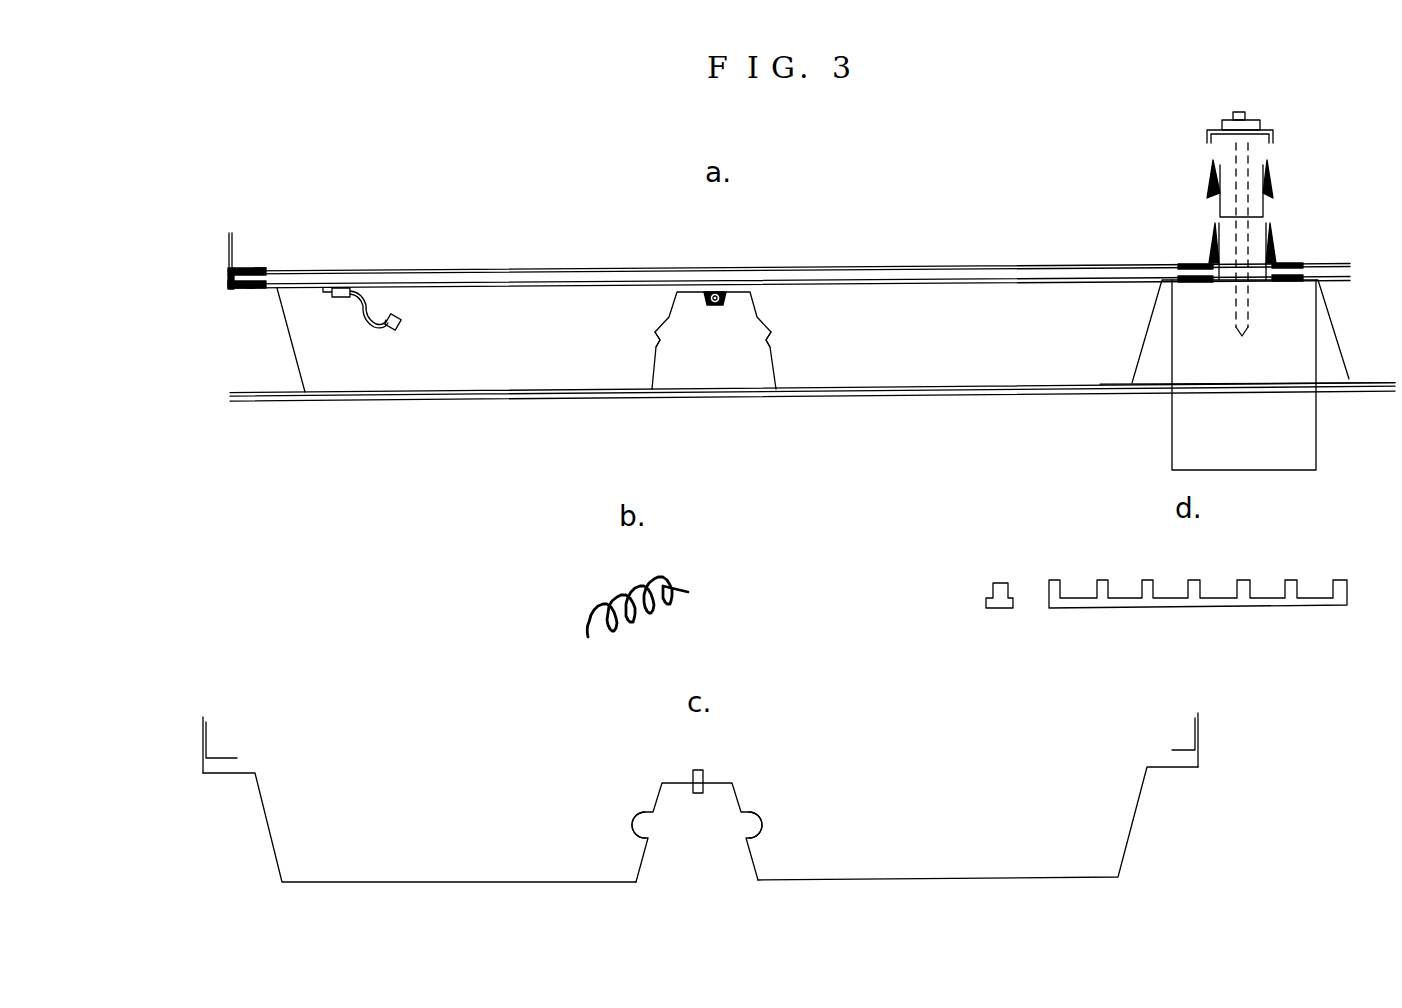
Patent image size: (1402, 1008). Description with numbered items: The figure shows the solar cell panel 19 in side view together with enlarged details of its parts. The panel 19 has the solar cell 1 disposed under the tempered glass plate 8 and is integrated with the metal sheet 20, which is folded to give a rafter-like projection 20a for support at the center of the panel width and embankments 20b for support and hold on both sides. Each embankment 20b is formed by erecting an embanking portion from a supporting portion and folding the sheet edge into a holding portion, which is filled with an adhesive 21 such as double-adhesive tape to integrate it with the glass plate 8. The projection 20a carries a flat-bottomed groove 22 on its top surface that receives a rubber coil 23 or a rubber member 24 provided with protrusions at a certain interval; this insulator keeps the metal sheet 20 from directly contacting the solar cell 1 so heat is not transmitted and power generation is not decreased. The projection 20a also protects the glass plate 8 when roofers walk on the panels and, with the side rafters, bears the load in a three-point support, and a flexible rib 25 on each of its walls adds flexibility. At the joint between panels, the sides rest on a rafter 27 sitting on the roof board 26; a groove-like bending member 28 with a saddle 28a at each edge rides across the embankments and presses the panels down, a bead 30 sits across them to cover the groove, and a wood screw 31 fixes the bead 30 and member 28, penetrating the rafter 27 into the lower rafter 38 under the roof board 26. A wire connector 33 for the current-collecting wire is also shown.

The solar cell 1 is at (531, 288).
The tempered glass plate 8 is at (528, 272).
The solar cell panel 19 is at (192, 332).
The metal sheet 20 is at (588, 396).
The rafter-like projection 20a is at (765, 305).
The embankments 20b is at (228, 256).
The adhesive 21 is at (268, 268).
The flat-bottomed groove 22 is at (717, 308).
The rubber coil 23 is at (720, 292).
The rubber member 24 is at (1000, 580).
The flexible rib 25 is at (655, 340).
The roof board 26 is at (1141, 395).
The rafter 27 is at (1287, 363).
The bending member 28 is at (1218, 210).
The saddle 28a is at (1210, 180).
The bead 30 is at (1265, 130).
The wood screw 31 is at (1235, 318).
The wire connector 33 is at (398, 330).
The lower rafter 38 is at (1305, 453).